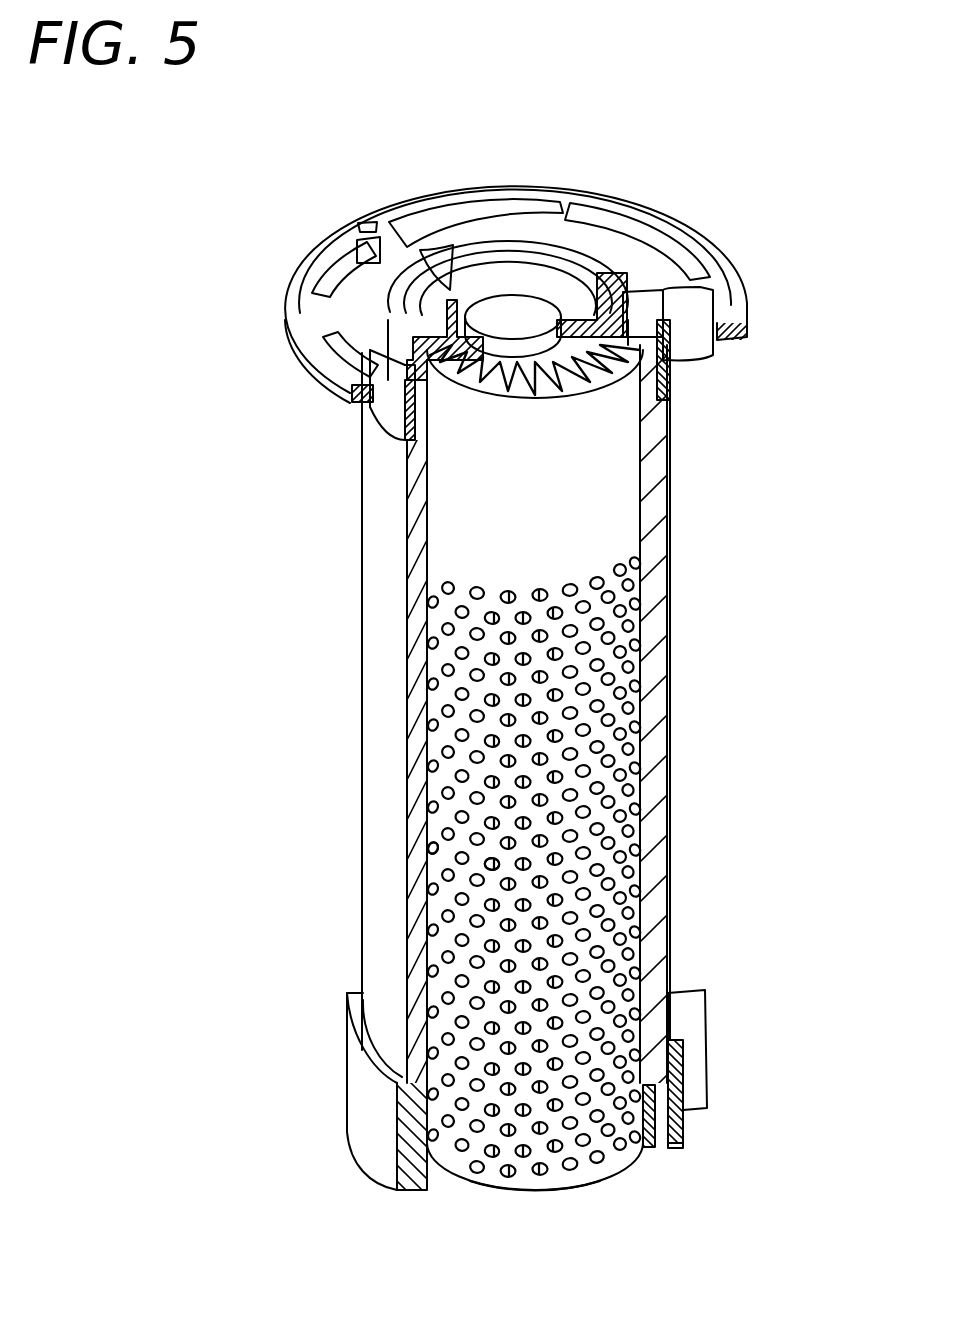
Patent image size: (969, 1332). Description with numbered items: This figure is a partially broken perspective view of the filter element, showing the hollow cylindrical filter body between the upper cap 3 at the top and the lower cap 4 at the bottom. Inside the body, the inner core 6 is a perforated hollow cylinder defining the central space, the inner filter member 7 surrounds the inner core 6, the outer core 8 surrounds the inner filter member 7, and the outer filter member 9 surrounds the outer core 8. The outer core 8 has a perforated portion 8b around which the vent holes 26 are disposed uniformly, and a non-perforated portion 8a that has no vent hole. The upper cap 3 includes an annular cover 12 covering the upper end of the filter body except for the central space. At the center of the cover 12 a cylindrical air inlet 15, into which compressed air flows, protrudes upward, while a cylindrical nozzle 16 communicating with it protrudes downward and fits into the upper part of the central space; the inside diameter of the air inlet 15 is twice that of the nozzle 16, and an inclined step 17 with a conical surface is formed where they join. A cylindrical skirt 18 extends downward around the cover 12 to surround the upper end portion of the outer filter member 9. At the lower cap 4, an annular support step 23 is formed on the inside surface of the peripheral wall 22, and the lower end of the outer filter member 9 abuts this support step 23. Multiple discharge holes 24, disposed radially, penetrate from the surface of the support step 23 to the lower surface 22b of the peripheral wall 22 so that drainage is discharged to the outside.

The upper cap 3 is at (672, 198).
The lower cap 4 is at (370, 1150).
The inner core 6 is at (540, 337).
The inner filter member 7 is at (520, 396).
The outer core 8 is at (643, 713).
The non-perforated portion 8a is at (600, 497).
The perforated portion 8b is at (600, 868).
The outer filter member 9 is at (383, 692).
The cover 12 is at (395, 313).
The air inlet 15 is at (458, 250).
The nozzle 16 is at (515, 333).
The inclined step 17 is at (480, 292).
The skirt 18 is at (392, 410).
The peripheral wall 22 is at (670, 1065).
The lower surface of the peripheral wall 22b is at (673, 1145).
The support step 23 is at (413, 1118).
The discharge holes 24 is at (660, 1118).
The vent holes 26 is at (490, 863).